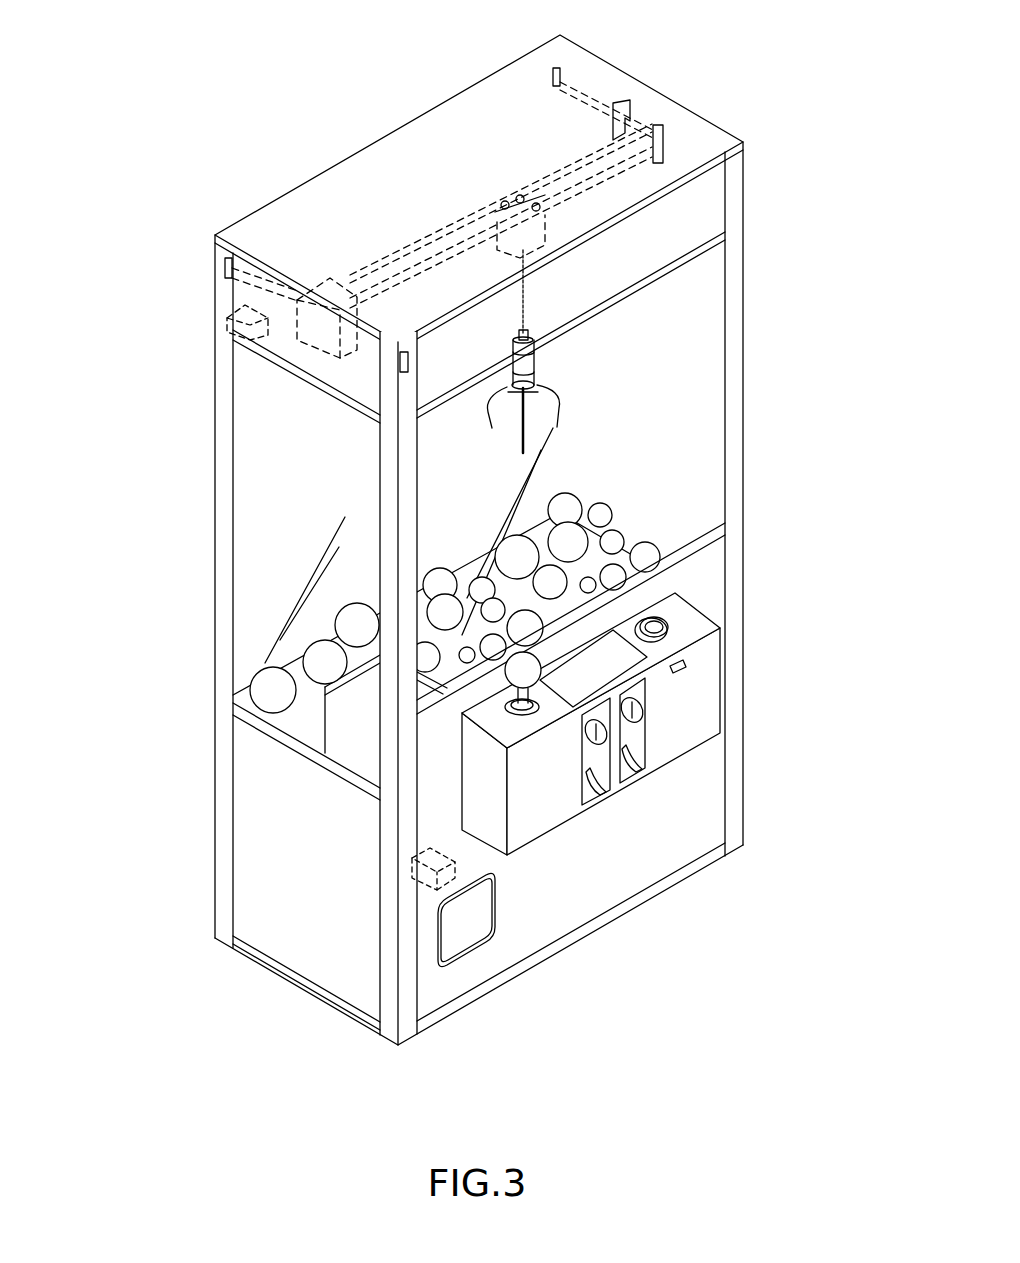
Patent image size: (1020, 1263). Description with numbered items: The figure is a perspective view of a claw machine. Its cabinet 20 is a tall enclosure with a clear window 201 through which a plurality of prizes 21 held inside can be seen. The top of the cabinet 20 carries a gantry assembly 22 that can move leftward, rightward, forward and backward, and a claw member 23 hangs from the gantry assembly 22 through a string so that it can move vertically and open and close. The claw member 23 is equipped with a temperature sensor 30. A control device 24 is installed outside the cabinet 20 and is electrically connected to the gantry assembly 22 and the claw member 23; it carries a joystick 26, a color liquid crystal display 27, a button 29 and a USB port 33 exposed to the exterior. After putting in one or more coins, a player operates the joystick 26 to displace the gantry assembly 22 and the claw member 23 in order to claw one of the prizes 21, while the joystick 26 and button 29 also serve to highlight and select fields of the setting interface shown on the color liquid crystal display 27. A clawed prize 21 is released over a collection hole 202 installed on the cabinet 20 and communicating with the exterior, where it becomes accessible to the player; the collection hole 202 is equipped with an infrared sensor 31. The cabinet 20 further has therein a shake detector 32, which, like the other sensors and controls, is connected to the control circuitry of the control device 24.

The cabinet 20 is at (213, 158).
The clear window 201 is at (262, 465).
The collection hole 202 is at (467, 933).
The prizes 21 is at (322, 655).
The gantry assembly 22 is at (503, 195).
The claw member 23 is at (560, 400).
The control device 24 is at (692, 615).
The joystick 26 is at (535, 695).
The color liquid crystal display 27 is at (607, 663).
The button 29 is at (660, 629).
The temperature sensor 30 is at (532, 345).
The infrared sensor 31 is at (418, 878).
The shake detector 32 is at (228, 317).
The USB port 33 is at (684, 669).